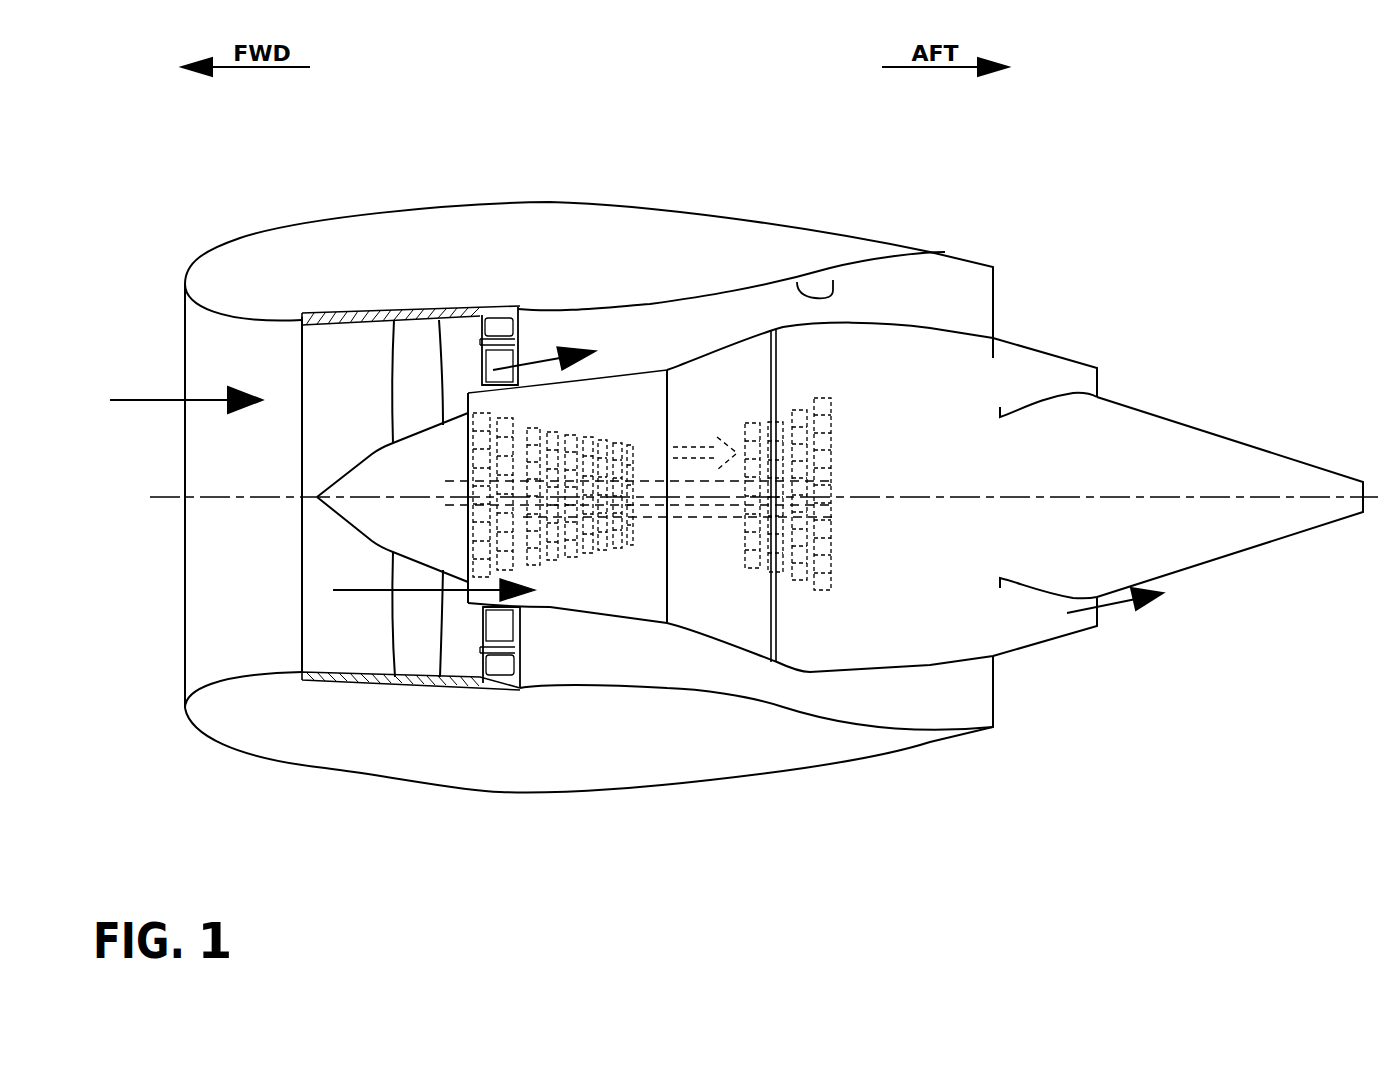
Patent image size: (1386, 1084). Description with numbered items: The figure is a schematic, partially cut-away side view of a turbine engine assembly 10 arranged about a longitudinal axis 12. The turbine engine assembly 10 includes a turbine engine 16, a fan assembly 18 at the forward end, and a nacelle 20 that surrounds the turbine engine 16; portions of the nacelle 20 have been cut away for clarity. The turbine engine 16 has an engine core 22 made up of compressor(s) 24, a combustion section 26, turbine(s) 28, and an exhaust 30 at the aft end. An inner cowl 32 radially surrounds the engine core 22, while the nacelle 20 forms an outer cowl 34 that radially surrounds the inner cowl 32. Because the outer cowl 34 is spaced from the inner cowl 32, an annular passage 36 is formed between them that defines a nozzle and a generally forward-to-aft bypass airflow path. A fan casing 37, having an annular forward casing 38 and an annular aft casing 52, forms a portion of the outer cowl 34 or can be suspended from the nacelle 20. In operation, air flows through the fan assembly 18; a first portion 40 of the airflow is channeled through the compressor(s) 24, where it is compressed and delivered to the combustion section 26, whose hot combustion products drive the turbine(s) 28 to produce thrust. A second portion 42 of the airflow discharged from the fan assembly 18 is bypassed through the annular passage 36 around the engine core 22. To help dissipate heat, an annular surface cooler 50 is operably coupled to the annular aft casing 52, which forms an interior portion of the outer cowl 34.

The turbine engine assembly 10 is at (433, 140).
The longitudinal axis 12 is at (162, 500).
The turbine engine 16 is at (647, 397).
The fan assembly 18 is at (410, 337).
The nacelle 20 is at (275, 225).
The engine core 22 is at (657, 592).
The compressor 24 is at (577, 560).
The combustion section 26 is at (697, 530).
The turbine 28 is at (802, 580).
The exhaust 30 is at (1087, 633).
The inner cowl 32 is at (783, 325).
The outer cowl 34 is at (833, 280).
The annular passage 36 is at (950, 692).
The fan casing 37 is at (306, 626).
The annular forward casing 38 is at (302, 585).
The first portion of the airflow 40 is at (458, 600).
The second portion of the airflow 42 is at (543, 360).
The surface cooler 50 is at (503, 632).
The annular aft casing 52 is at (498, 303).